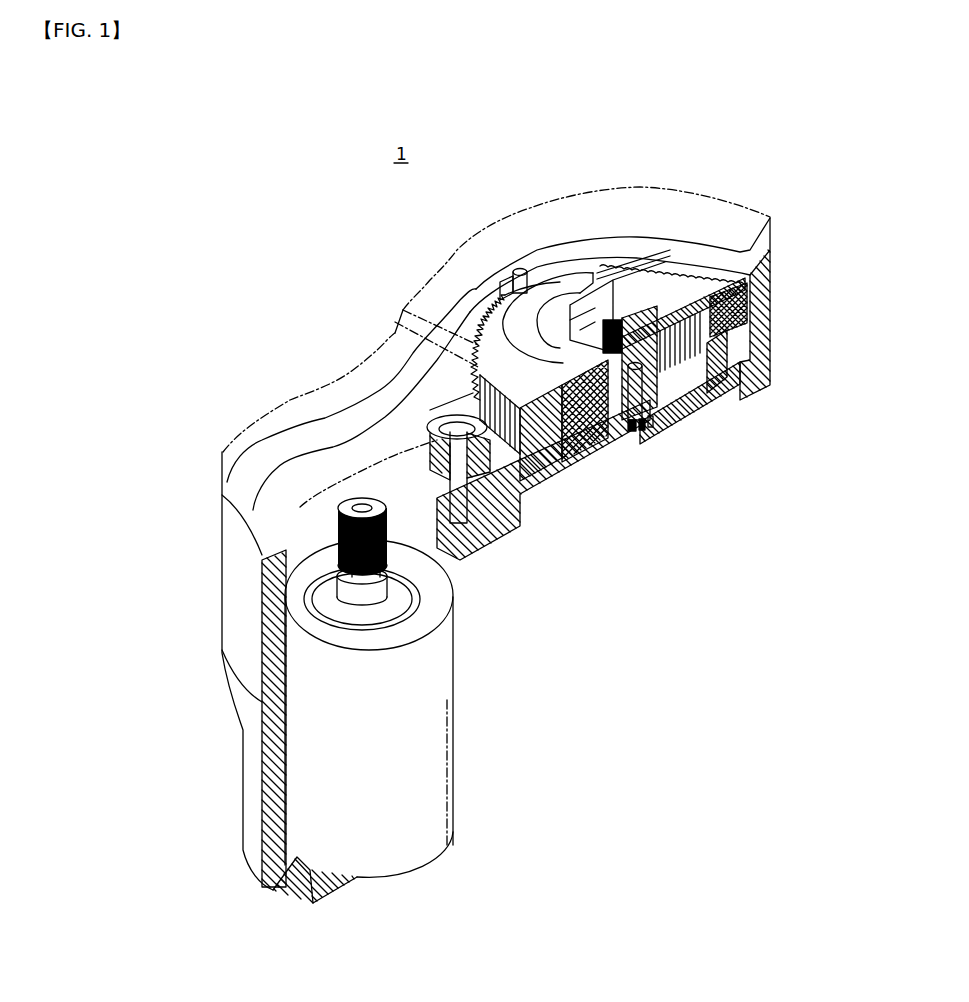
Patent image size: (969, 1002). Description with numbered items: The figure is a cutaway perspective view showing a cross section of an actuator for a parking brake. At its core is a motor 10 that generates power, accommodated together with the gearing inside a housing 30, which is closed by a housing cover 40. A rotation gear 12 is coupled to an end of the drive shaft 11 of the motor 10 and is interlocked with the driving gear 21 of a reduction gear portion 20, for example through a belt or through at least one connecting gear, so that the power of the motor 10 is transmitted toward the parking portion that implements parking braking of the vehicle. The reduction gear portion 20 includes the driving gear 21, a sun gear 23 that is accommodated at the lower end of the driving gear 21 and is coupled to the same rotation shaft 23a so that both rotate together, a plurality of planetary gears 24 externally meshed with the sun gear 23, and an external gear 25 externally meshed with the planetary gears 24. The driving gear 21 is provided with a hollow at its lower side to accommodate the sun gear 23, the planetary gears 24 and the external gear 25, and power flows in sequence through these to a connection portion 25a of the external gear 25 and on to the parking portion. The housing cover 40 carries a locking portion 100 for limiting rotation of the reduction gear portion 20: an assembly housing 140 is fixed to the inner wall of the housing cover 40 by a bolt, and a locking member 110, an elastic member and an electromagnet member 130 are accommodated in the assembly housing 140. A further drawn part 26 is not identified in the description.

The motor 10 is at (410, 857).
The drive shaft 11 is at (365, 573).
The rotation gear 12 is at (450, 563).
The reduction gear portion 20 is at (698, 403).
The driving gear 21 is at (748, 307).
The sun gear 23 is at (604, 455).
The rotation shaft 23a is at (628, 435).
The planetary gears 24 is at (577, 458).
The external gear 25 is at (680, 403).
The connection portion 25a is at (650, 422).
The side plate 26 is at (722, 340).
The housing 30 is at (230, 577).
The housing cover 40 is at (223, 455).
The locking portion 100 is at (657, 277).
The locking member 110 is at (628, 290).
The electromagnet member 130 is at (543, 307).
The assembly housing 140 is at (517, 308).